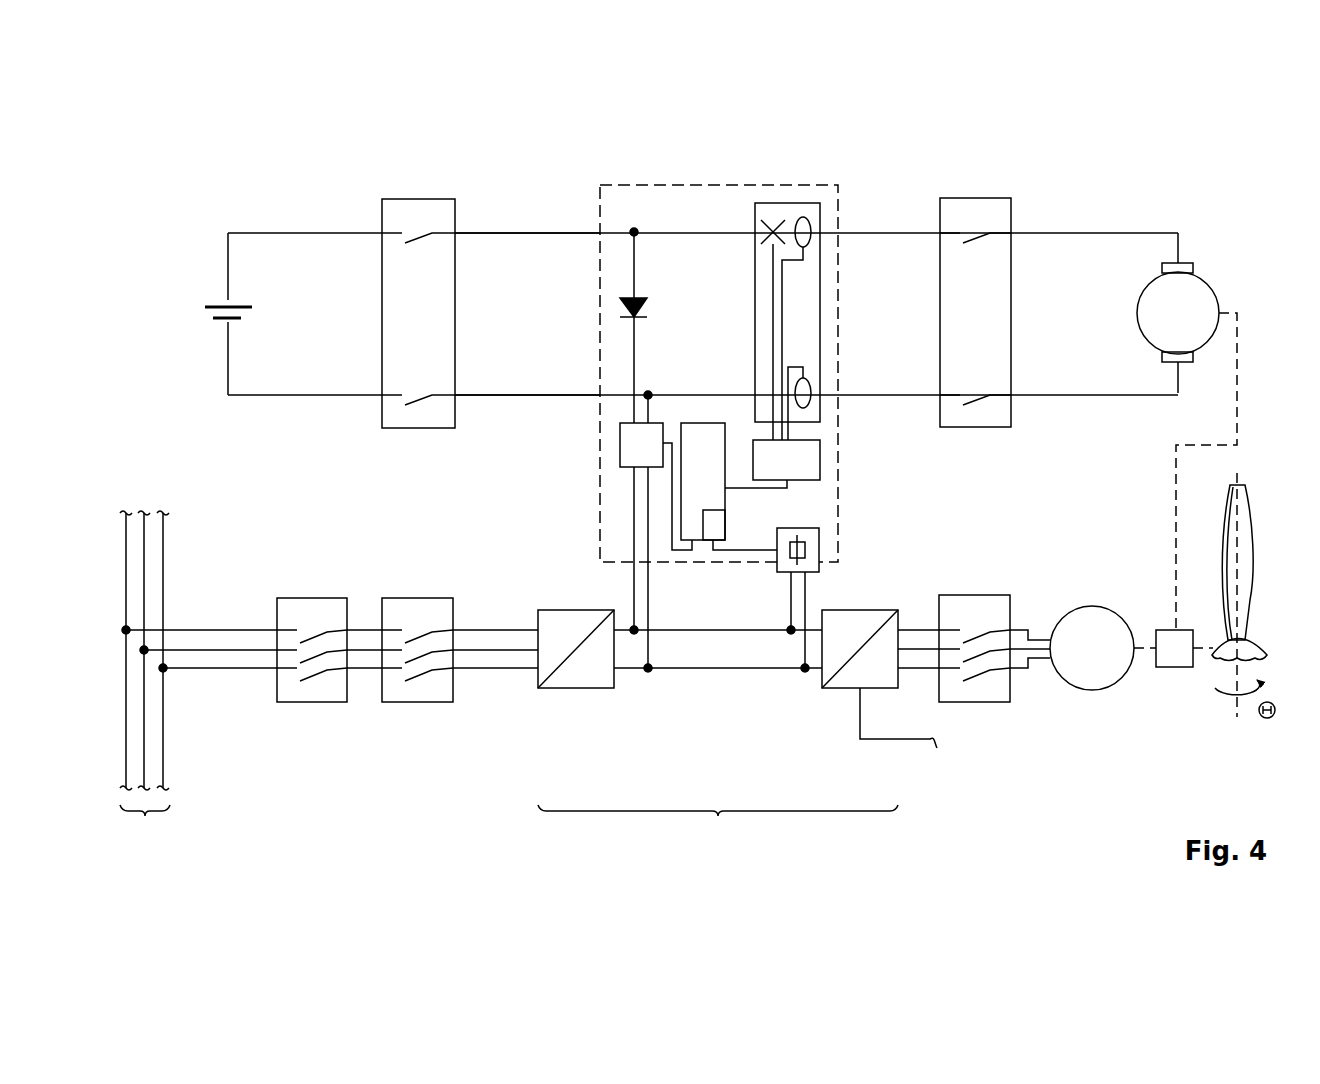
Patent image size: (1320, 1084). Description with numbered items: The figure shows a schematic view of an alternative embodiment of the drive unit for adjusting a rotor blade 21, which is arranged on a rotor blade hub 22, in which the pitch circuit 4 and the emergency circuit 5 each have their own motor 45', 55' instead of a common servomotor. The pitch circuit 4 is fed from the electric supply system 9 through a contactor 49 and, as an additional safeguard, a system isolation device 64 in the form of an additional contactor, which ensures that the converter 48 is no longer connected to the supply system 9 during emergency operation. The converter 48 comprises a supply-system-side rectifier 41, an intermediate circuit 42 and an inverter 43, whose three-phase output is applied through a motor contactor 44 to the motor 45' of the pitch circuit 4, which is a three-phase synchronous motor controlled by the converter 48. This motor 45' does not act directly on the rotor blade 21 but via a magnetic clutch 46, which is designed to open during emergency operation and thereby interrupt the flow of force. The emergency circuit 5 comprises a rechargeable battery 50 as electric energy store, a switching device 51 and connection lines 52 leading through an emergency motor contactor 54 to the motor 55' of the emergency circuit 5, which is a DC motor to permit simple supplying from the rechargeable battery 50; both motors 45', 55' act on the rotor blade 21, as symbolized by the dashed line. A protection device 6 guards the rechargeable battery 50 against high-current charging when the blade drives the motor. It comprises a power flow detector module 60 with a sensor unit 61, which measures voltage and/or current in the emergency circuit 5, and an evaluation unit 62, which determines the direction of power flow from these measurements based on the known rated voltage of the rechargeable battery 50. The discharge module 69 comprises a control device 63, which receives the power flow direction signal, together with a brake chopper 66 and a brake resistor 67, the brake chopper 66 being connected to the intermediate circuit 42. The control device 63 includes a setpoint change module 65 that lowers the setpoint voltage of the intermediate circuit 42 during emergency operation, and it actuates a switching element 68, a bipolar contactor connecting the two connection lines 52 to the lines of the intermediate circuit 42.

The pitch circuit 4 is at (250, 757).
The emergency circuit 5 is at (300, 208).
The protection device 6 is at (600, 535).
The electric supply system 9 is at (145, 680).
The rotor blade 21 is at (1255, 566).
The rotor blade hub 22 is at (1255, 652).
The supply-system-side rectifier 41 is at (577, 688).
The intermediate circuit 42 is at (718, 670).
The inverter 43 is at (838, 688).
The motor contactor 44 is at (973, 702).
The motor of the pitch circuit 45' is at (1092, 687).
The magnetic clutch 46 is at (1175, 668).
The converter 48 is at (718, 827).
The contactor 49 is at (312, 702).
The rechargeable battery 50 is at (228, 306).
The switching device 51 is at (418, 198).
The connection lines 52 is at (518, 232).
The emergency motor contactor 54 is at (975, 198).
The motor of the emergency circuit 55' is at (1214, 431).
The power flow detector module 60 is at (822, 432).
The sensor unit 61 is at (755, 312).
The evaluation unit 62 is at (800, 474).
The control device 63 is at (716, 474).
The system isolation device 64 is at (417, 702).
The setpoint change module 65 is at (722, 525).
The brake chopper 66 is at (819, 538).
The brake resistor 67 is at (806, 550).
The switching element 68 is at (654, 459).
The discharge module 69 is at (617, 443).